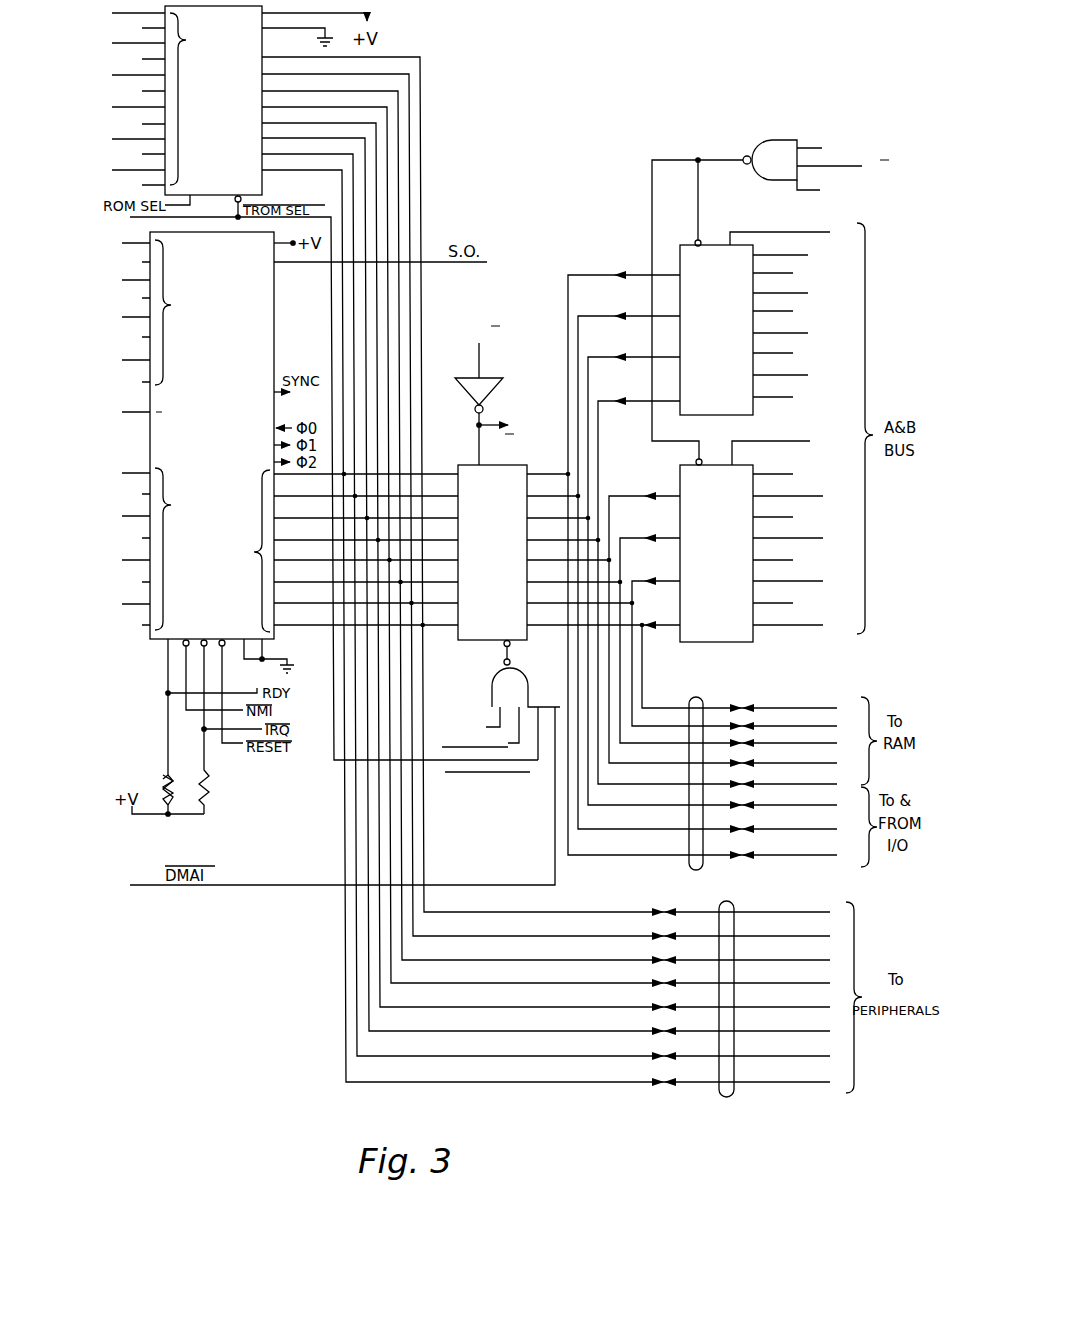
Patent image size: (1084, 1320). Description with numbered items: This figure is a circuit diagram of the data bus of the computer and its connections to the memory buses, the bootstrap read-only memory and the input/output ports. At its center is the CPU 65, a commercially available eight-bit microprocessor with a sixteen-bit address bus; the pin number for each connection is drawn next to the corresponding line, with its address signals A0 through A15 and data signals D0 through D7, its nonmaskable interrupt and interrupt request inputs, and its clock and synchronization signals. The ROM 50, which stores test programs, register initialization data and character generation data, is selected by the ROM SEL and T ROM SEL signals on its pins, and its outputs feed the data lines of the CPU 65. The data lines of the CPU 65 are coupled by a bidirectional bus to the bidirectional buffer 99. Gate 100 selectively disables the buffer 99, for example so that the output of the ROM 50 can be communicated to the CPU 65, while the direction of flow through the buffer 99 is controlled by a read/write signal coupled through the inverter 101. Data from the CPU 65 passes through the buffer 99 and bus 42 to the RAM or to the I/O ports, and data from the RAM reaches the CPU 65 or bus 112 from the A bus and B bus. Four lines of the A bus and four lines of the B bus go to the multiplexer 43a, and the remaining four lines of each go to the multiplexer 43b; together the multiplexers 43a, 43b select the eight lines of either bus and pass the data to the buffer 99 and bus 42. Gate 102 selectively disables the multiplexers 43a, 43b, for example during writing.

The ROM 50 is at (179, 100).
The CPU 65 is at (209, 447).
The bidirectional buffer 99 is at (492, 552).
The gate 100 is at (500, 688).
The inverter 101 is at (490, 383).
The gate 102 is at (770, 148).
The multiplexer 43a is at (755, 314).
The multiplexer 43b is at (763, 532).
The bus 42 is at (698, 698).
The bus 112 is at (728, 902).